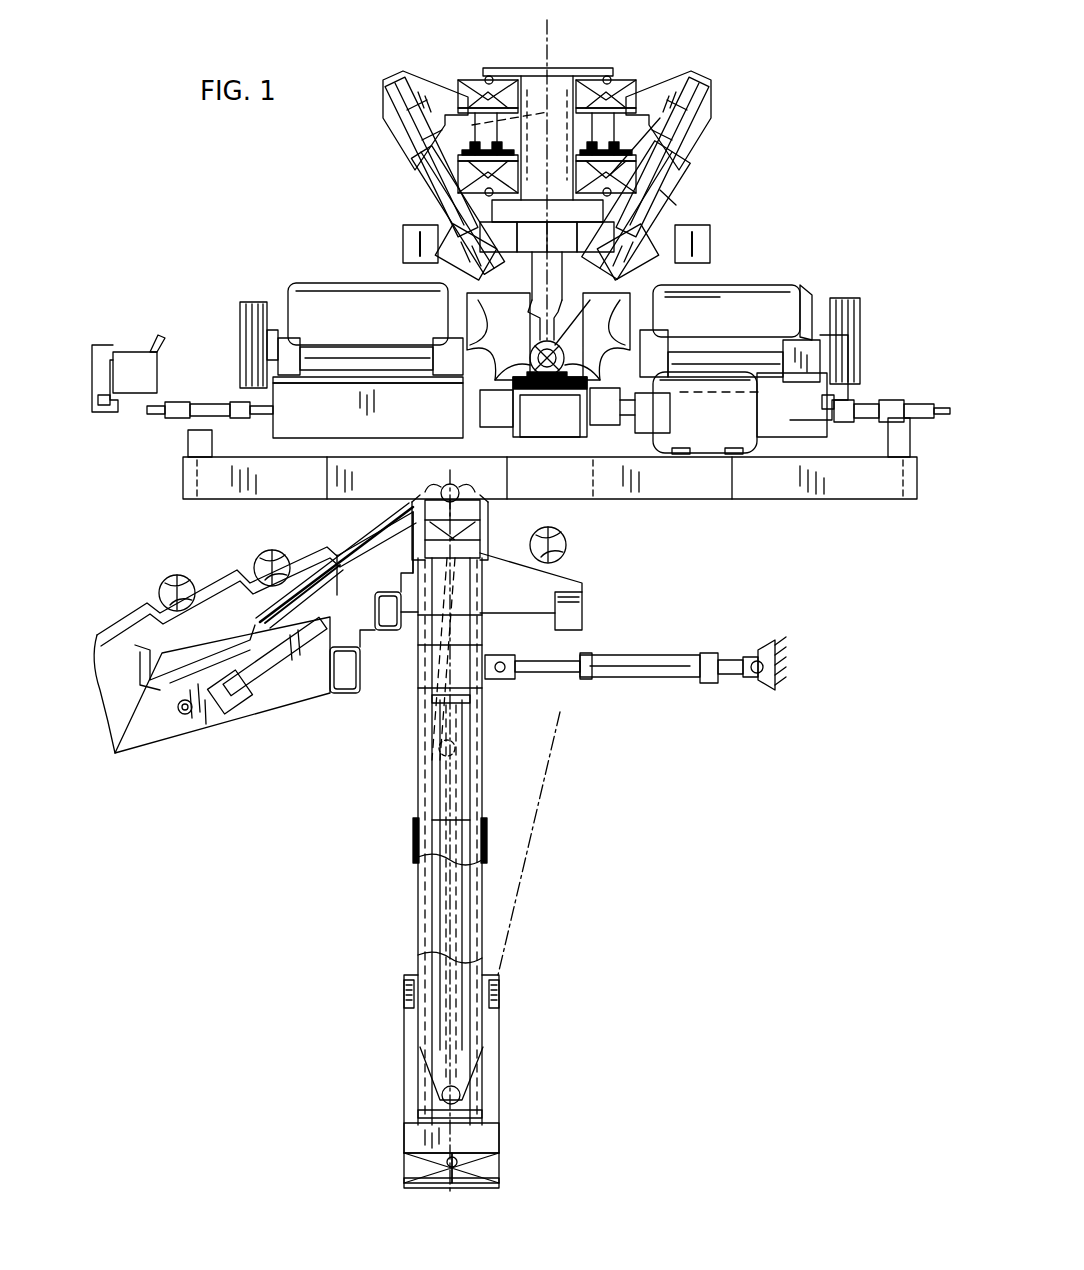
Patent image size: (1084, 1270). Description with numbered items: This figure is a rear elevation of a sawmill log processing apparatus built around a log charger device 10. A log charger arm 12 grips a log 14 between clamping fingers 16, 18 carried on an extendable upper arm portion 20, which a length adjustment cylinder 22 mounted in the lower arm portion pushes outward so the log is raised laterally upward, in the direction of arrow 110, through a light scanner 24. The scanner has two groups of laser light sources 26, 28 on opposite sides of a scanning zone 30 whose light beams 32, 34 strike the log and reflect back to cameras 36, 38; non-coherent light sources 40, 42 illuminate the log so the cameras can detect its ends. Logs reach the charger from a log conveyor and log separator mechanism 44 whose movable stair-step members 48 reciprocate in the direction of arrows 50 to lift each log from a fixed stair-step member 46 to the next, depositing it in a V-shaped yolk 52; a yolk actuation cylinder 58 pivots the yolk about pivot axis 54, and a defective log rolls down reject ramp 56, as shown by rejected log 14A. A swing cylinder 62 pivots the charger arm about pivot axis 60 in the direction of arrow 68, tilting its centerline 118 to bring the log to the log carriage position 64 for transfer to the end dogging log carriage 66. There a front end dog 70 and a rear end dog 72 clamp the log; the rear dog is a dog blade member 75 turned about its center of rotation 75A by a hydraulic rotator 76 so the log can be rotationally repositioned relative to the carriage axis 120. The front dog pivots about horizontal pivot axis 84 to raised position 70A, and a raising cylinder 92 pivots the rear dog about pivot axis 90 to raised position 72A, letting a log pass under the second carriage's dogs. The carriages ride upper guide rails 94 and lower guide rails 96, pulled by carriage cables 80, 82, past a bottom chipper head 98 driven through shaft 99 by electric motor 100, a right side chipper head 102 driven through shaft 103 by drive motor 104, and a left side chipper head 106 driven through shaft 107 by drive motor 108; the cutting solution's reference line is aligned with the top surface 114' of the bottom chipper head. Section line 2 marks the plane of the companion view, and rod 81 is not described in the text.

The section line 2 is at (353, 70).
The log charger device 10 is at (390, 762).
The log charger arm 12 is at (482, 750).
The log 14 is at (146, 570).
The rejected log 14A is at (566, 535).
The clamping finger 16 is at (438, 492).
The clamping finger 18 is at (470, 492).
The upper arm portion 20 is at (485, 548).
The length adjustment cylinder 22 is at (440, 895).
The light scanner 24 is at (195, 368).
The laser light sources 26 is at (118, 414).
The laser light sources 28 is at (818, 400).
The scanning zone 30 is at (425, 428).
The light beam 32 is at (342, 410).
The light beam 34 is at (730, 398).
The cameras 36 is at (100, 410).
The cameras 38 is at (845, 405).
The non-coherent light source 40 is at (150, 348).
The non-coherent light source 42 is at (790, 340).
The log conveyor and log separator mechanism 44 is at (247, 555).
The fixed stair-step member 46 is at (312, 552).
The movable stair-step member 48 is at (345, 560).
The arrows 50 is at (230, 557).
The V-shaped yolk 52 is at (490, 510).
The pivot axis 54 is at (256, 632).
The reject ramp 56 is at (570, 583).
The yolk actuation cylinder 58 is at (418, 696).
The pivot axis 60 is at (455, 1160).
The swing cylinder 62 is at (648, 655).
The log carriage position 64 is at (556, 340).
The end dogging log carriage 66 is at (628, 104).
The arrow 68 is at (460, 808).
The front end dog 70 is at (546, 336).
The raised position of front end dog 70A is at (552, 275).
The rear end dog 72 is at (470, 330).
The raised position of rear end dog 72A is at (650, 200).
The dog blade member 75 is at (678, 222).
The center of rotation 75A is at (560, 340).
The hydraulic rotator 76 is at (672, 158).
The carriage cable 80 is at (486, 74).
The piston rod 81 is at (450, 205).
The carriage cable 82 is at (508, 66).
The horizontal pivot axis 84 is at (553, 212).
The pivot axis 90 is at (690, 240).
The raising cylinder 92 is at (420, 133).
The upper guide rails 94 is at (491, 74).
The lower guide rails 96 is at (521, 163).
The bottom chipper head 98 is at (540, 440).
The shaft 99 is at (622, 430).
The electric motor 100 is at (725, 355).
The right side chipper head 102 is at (640, 320).
The shaft 103 is at (718, 340).
The drive motor 104 is at (762, 285).
The left side chipper head 106 is at (470, 303).
The shaft 107 is at (380, 342).
The drive motor 108 is at (340, 290).
The arrow 110 is at (498, 562).
The top surface of the bottom chipper head 114' is at (712, 383).
The centerline of the log charger 118 is at (455, 740).
The vertical axis of the log carriage 120 is at (489, 126).